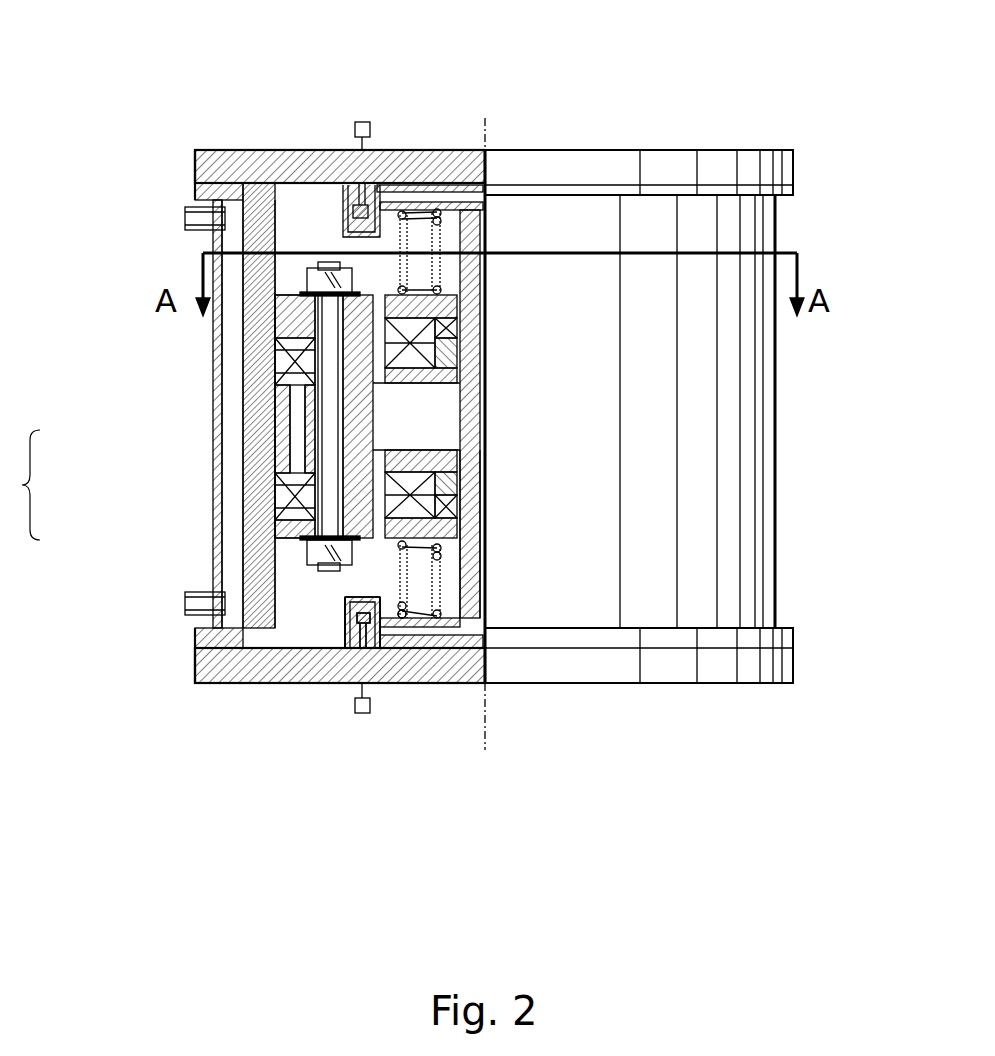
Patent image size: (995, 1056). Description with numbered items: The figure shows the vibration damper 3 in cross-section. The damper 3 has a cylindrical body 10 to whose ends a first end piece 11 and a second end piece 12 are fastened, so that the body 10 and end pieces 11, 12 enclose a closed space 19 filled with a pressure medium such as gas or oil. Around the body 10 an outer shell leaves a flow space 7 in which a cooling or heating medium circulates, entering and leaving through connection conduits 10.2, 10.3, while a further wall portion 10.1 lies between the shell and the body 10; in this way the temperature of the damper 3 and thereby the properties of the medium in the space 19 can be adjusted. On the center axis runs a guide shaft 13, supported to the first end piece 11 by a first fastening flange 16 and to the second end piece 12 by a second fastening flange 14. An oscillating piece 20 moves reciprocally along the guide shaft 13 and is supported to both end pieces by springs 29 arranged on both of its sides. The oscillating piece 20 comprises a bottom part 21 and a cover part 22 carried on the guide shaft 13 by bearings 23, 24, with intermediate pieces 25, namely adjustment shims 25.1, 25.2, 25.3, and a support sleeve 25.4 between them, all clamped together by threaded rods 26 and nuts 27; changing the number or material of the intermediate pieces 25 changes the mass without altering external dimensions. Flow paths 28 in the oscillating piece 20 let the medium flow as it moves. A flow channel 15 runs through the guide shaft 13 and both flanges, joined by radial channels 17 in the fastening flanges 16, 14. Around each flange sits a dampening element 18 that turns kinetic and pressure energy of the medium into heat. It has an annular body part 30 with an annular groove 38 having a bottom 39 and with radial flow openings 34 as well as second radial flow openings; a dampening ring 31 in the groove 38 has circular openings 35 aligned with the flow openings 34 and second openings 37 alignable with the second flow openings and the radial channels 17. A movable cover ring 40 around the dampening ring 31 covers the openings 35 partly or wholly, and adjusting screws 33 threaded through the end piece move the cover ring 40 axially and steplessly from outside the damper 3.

The vibration damper 3 is at (760, 240).
The flow space 7 is at (236, 510).
The cylindrical body 10 is at (196, 683).
The housing wall 10.1 is at (215, 247).
The connection conduit 10.2 is at (197, 220).
The connection conduit 10.3 is at (200, 607).
The first end piece 11 is at (323, 618).
The second end piece 12 is at (263, 163).
The guide shaft 13 is at (480, 545).
The second fastening flange 14 is at (432, 186).
The flow channel 15 is at (483, 433).
The first fastening flange 16 is at (435, 655).
The radial channel 17 is at (483, 186).
The dampening element 18 is at (333, 195).
The closed space 19 is at (300, 213).
The oscillating piece 20 is at (385, 420).
The bottom part 21 is at (300, 521).
The cover part 22 is at (285, 325).
The bearing 23 is at (447, 325).
The bearing 24 is at (483, 515).
The intermediate pieces 25 is at (157, 417).
The adjustment shim 25.1 is at (300, 378).
The adjustment shim 25.2 is at (292, 360).
The adjustment shim 25.3 is at (305, 476).
The support sleeve 25.4 is at (300, 395).
The threaded rod 26 is at (340, 505).
The nut 27 is at (318, 283).
The flow path 28 is at (430, 368).
The spring 29 is at (440, 240).
The annular body part 30 is at (360, 628).
The dampening ring 31 is at (372, 648).
The adjusting screw 33 is at (362, 122).
The flow opening 34 is at (402, 614).
The opening 35 is at (435, 588).
The second opening 37 is at (398, 683).
The annular groove 38 is at (366, 630).
The bottom 39 is at (352, 625).
The cover ring 40 is at (373, 632).